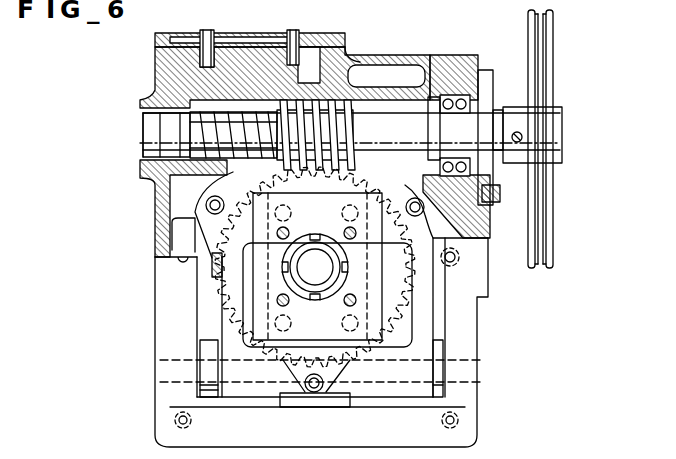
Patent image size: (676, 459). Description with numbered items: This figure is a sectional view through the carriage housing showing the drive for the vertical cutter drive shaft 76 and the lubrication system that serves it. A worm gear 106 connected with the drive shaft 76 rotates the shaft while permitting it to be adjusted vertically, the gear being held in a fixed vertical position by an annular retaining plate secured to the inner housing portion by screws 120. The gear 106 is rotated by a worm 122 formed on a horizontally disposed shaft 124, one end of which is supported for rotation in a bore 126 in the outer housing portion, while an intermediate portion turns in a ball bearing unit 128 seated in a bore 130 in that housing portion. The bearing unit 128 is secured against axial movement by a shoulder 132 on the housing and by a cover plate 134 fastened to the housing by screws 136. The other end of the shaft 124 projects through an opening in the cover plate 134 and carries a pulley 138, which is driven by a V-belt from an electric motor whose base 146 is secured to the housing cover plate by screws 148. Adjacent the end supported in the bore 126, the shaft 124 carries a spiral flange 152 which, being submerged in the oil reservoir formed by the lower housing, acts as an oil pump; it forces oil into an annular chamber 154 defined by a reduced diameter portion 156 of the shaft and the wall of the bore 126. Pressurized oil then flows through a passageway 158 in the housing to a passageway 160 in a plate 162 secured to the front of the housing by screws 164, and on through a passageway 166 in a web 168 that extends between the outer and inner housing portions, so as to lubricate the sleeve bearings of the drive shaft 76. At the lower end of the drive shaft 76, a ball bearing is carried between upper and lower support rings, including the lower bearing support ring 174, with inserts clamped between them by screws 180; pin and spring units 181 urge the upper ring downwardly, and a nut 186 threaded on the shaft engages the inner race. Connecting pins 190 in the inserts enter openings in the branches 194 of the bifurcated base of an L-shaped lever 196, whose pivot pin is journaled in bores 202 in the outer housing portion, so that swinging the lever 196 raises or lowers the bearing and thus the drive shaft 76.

The drive shaft 76 is at (323, 276).
The worm gear 106 is at (350, 376).
The screws 120 is at (262, 178).
The worm 122 is at (340, 117).
The shaft 124 is at (404, 140).
The bore 126 is at (143, 118).
The ball bearing unit 128 is at (470, 70).
The bore 130 is at (452, 70).
The shoulder 132 is at (447, 96).
The cover plate 134 is at (490, 81).
The screws 136 is at (492, 180).
The pulley 138 is at (550, 38).
The base 146 is at (362, 3).
The screws 148 is at (256, 4).
The spiral flange 152 is at (218, 117).
The annular chamber 154 is at (152, 178).
The reduced diameter portion 156 is at (180, 137).
The passageway 158 is at (183, 75).
The passageway 160 is at (182, 42).
The plate 162 is at (243, 30).
The screws 164 is at (200, 32).
The passageway 166 is at (350, 56).
The web 168 is at (352, 85).
The lower bearing support ring 174 is at (291, 323).
The screws 180 is at (289, 232).
The pin and spring units 181 is at (290, 211).
The nut 186 is at (340, 274).
The connecting pins 190 is at (212, 268).
The branches 194 is at (225, 322).
The L-shaped lever 196 is at (430, 352).
The bores 202 is at (160, 360).